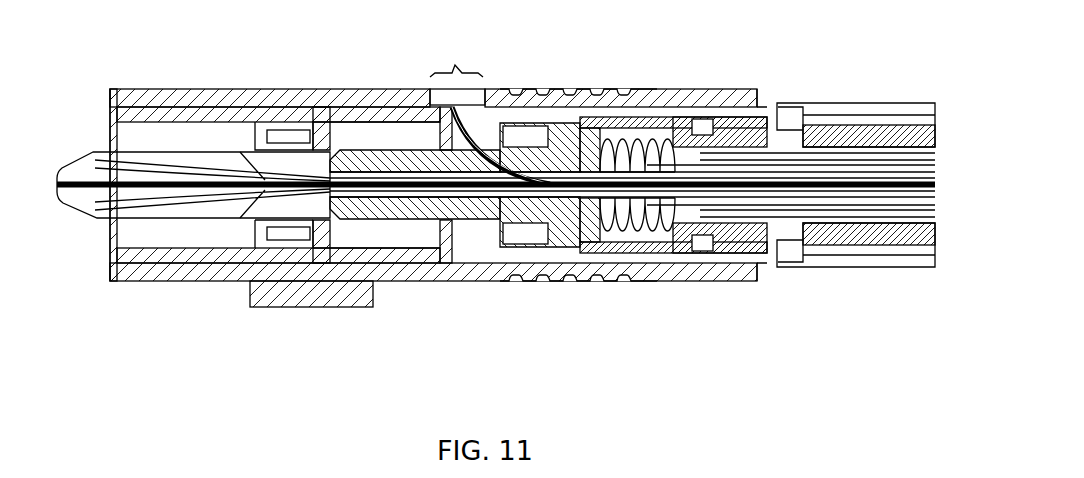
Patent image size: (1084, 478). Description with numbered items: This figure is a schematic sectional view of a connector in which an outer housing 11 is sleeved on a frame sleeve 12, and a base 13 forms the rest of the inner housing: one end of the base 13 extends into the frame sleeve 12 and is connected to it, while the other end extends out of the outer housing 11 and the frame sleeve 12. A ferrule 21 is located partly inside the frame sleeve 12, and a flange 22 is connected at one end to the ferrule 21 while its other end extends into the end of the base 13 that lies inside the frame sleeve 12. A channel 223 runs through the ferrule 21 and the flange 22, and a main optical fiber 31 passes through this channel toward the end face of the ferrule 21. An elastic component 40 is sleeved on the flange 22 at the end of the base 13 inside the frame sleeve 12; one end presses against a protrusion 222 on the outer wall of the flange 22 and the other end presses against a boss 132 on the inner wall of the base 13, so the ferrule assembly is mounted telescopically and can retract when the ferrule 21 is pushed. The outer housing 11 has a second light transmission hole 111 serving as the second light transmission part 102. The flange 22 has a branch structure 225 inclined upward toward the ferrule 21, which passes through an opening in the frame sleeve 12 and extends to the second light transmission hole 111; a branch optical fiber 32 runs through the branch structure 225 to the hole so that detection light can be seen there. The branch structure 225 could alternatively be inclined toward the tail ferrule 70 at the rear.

The outer housing 11 is at (213, 90).
The frame sleeve 12 is at (137, 118).
The base 13 is at (755, 107).
The ferrule 21 is at (87, 157).
The flange 22 is at (373, 208).
The main optical fiber 31 is at (427, 190).
The branch optical fiber 32 is at (500, 163).
The elastic component 40 is at (640, 133).
The tail ferrule 70 is at (880, 108).
The second light transmission part 102 is at (457, 71).
The second light transmission hole 111 is at (507, 150).
The boss 132 is at (687, 120).
The protrusion 222 is at (567, 130).
The channel 223 is at (492, 196).
The branch structure 225 is at (445, 128).